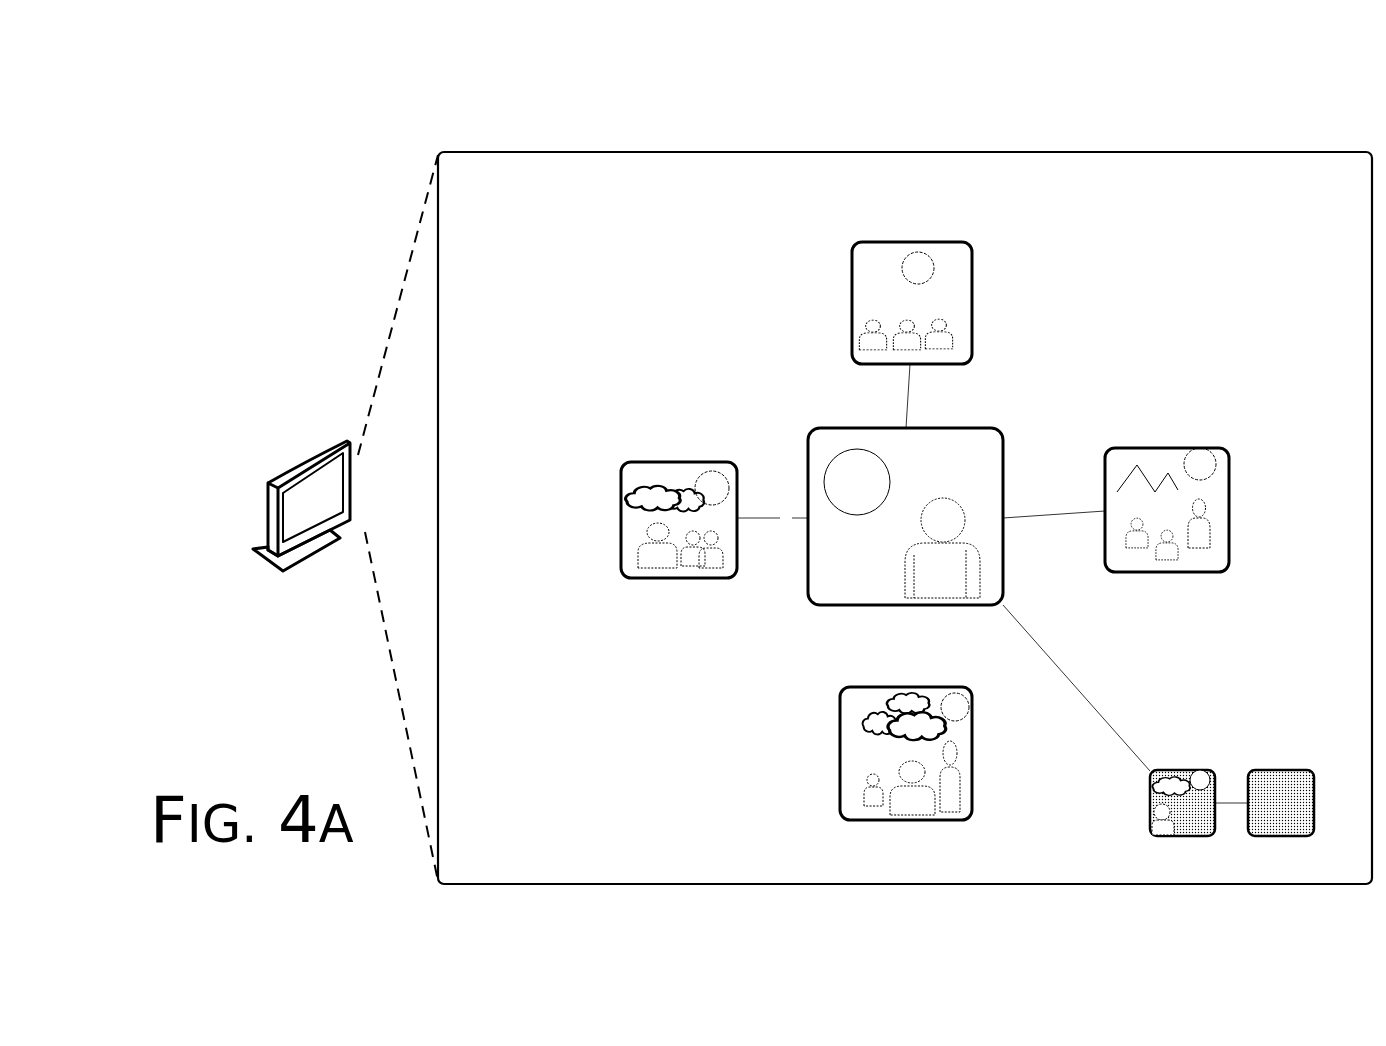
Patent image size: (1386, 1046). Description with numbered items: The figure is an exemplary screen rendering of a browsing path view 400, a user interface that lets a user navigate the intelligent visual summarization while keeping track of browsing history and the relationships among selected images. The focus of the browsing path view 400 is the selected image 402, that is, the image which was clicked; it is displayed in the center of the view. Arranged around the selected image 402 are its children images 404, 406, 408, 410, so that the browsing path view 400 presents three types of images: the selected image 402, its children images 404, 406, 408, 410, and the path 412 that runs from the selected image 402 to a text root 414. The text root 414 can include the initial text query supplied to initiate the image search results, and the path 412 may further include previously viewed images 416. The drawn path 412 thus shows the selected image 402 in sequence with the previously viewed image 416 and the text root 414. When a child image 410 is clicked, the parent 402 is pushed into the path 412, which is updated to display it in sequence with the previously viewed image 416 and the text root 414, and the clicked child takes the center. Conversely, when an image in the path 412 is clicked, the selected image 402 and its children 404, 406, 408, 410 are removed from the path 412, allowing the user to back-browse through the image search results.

The browsing path view 400 is at (1288, 100).
The selected image 402 is at (1000, 428).
The child image 404 is at (970, 243).
The child image 406 is at (1226, 448).
The child image 408 is at (840, 688).
The child image 410 is at (621, 462).
The path 412 is at (1081, 691).
The text root 414 is at (1280, 770).
The previously viewed image 416 is at (1215, 770).